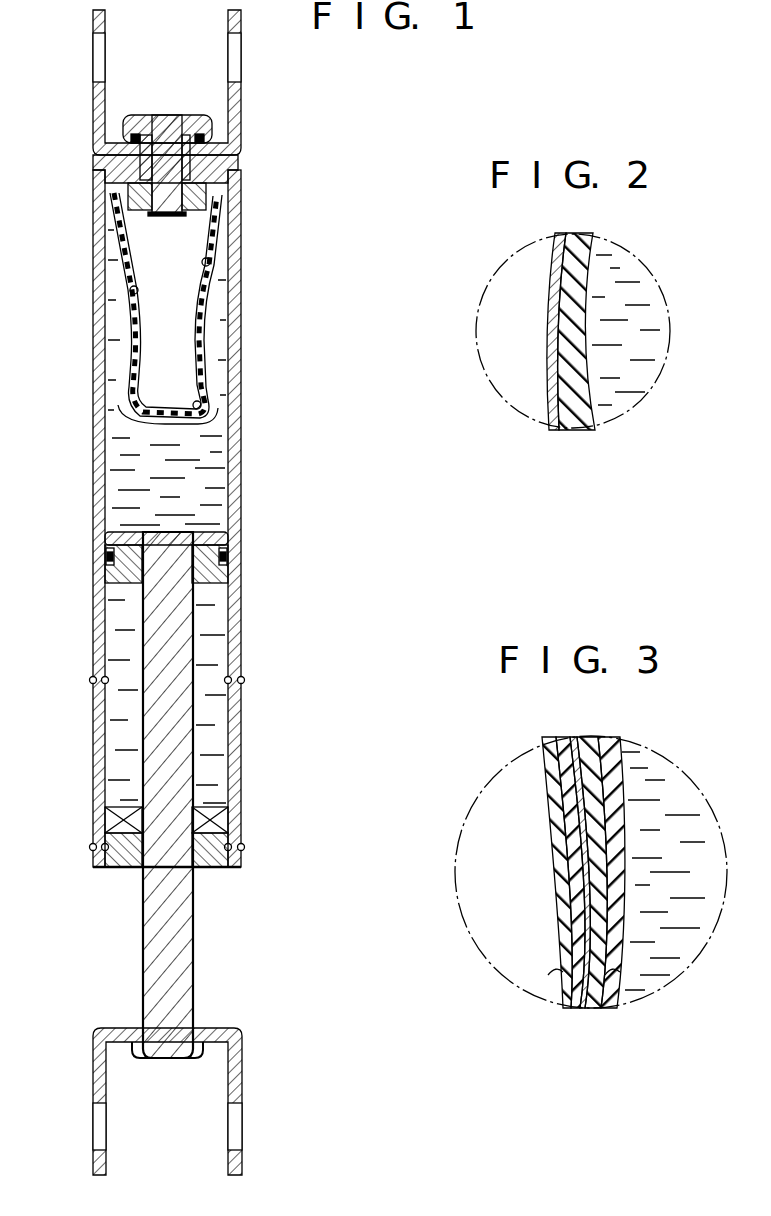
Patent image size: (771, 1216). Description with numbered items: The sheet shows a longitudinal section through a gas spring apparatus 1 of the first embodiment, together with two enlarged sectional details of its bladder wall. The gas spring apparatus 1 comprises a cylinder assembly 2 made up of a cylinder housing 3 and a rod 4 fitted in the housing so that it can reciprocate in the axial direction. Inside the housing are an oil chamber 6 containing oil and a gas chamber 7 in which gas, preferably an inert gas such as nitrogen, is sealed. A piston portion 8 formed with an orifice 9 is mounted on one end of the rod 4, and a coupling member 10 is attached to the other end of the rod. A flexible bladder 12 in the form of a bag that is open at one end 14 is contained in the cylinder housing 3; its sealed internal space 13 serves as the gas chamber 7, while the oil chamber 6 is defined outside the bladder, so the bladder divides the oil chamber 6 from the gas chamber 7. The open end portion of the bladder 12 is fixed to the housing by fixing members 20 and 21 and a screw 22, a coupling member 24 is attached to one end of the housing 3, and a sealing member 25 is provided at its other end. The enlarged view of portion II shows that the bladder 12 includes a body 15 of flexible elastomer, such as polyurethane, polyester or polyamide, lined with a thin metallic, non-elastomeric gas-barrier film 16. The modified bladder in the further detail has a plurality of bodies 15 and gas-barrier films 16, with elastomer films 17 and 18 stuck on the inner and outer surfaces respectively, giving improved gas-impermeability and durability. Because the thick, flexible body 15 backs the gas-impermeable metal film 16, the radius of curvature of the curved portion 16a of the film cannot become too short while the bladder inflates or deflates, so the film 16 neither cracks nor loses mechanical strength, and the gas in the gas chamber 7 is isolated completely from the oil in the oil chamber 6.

In FIG. 1, the gas spring apparatus 1 is at (95, 180).
In FIG. 1, the cylinder assembly 2 is at (95, 400).
In FIG. 1, the cylinder housing 3 is at (100, 532).
In FIG. 1, the rod 4 is at (150, 930).
In FIG. 1, the oil chamber 6 is at (130, 470).
In FIG. 2, the oil chamber 6 is at (650, 365).
In FIG. 3, the oil chamber 6 is at (680, 790).
In FIG. 1, the gas chamber 7 is at (175, 305).
In FIG. 2, the gas chamber 7 is at (490, 353).
In FIG. 3, the gas chamber 7 is at (495, 800).
In FIG. 1, the piston portion 8 is at (228, 582).
In FIG. 1, the orifice 9 is at (112, 592).
In FIG. 1, the coupling member 10 is at (96, 1078).
In FIG. 1, the flexible bladder 12 is at (175, 305).
In FIG. 2, the flexible bladder 12 is at (606, 339).
In FIG. 1, the sealed internal space 13 is at (210, 262).
In FIG. 1, the open end 14 is at (232, 197).
In FIG. 1, the body 15 is at (175, 305).
In FIG. 2, the body 15 is at (585, 395).
In FIG. 3, the body 15 is at (557, 743).
In FIG. 1, the gas-barrier film 16 is at (175, 305).
In FIG. 2, the gas-barrier film 16 is at (555, 405).
In FIG. 3, the gas-barrier film 16 is at (575, 743).
In FIG. 1, the curved portion 16a is at (210, 418).
In FIG. 3, the elastomer film 17 is at (550, 975).
In FIG. 3, the elastomer film 18 is at (612, 975).
In FIG. 1, the fixing member 20 is at (240, 166).
In FIG. 1, the fixing member 21 is at (222, 212).
In FIG. 1, the screw 22 is at (176, 115).
In FIG. 1, the coupling member 24 is at (98, 112).
In FIG. 1, the sealing member 25 is at (224, 820).
In FIG. 1, the portion II is at (210, 345).